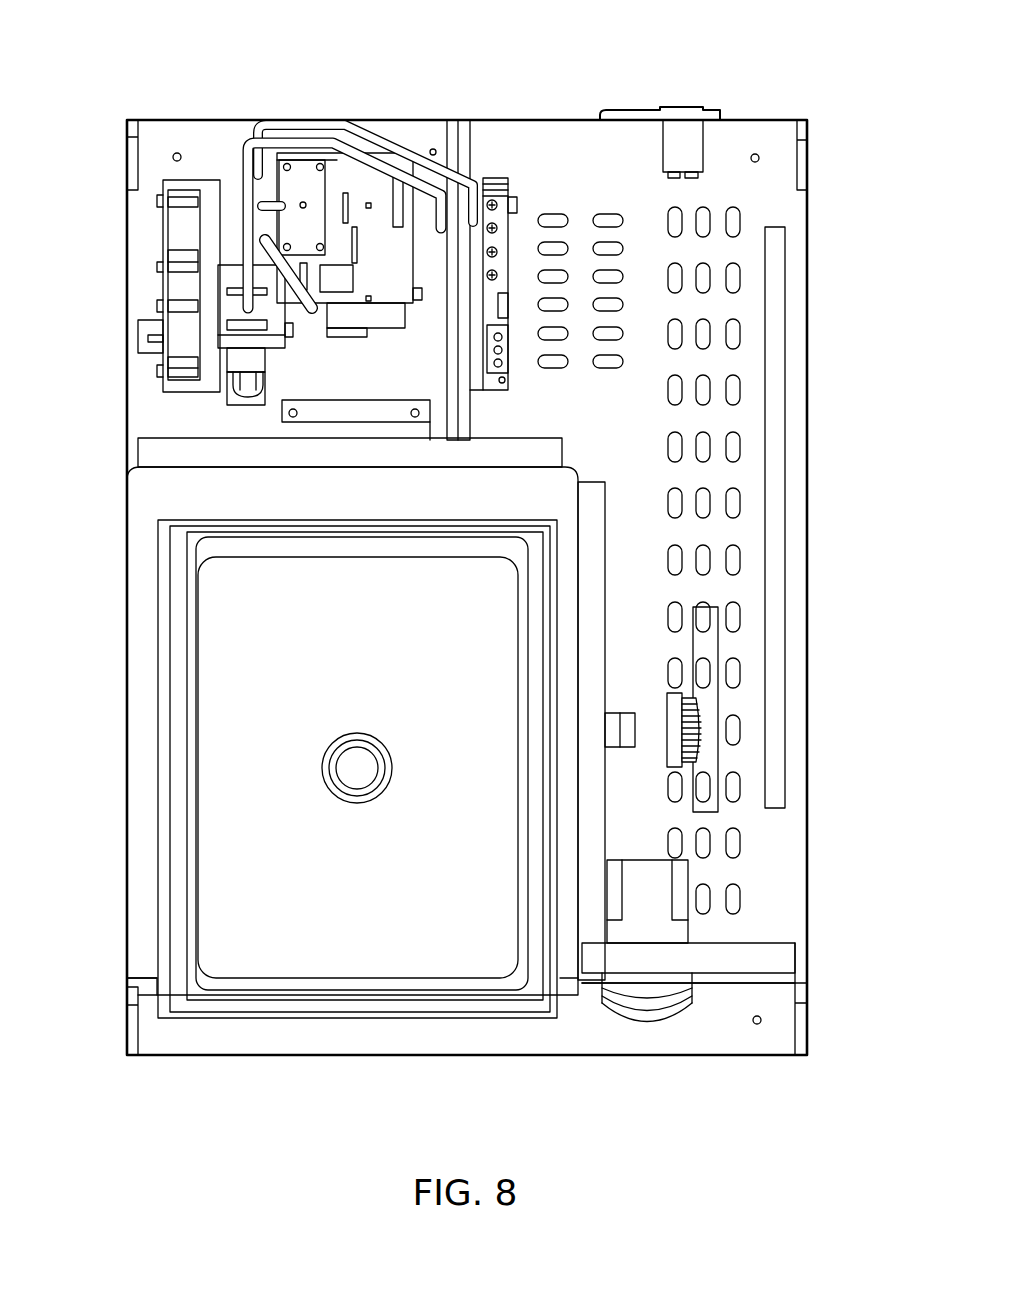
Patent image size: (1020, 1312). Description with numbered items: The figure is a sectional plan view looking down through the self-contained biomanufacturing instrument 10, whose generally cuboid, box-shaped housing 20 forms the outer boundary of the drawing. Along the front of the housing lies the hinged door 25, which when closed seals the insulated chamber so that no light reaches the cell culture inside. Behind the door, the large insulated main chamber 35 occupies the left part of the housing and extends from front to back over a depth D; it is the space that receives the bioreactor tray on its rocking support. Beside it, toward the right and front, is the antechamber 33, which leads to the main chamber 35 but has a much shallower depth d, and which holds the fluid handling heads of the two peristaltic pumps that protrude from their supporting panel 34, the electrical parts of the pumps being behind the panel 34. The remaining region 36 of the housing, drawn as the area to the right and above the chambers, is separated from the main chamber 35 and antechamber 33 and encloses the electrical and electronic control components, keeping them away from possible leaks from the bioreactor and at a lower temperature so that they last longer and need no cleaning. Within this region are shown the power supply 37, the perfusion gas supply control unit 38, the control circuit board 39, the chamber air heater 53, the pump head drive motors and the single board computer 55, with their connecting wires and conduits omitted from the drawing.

The instrument 10 is at (89, 85).
The housing 20 is at (125, 300).
The door 25 is at (308, 1045).
The antechamber 33 is at (712, 1028).
The panel 34 is at (737, 985).
The main chamber 35 is at (163, 636).
The remaining region 36 is at (611, 430).
The power supply 37 is at (189, 196).
The perfusion gas supply control unit 38 is at (348, 200).
The control circuit board 39 is at (775, 590).
The chamber air heater 53 is at (612, 734).
The single board computer 55 is at (706, 730).
The depth of main chamber D is at (51, 522).
The depth of antechamber d is at (858, 983).